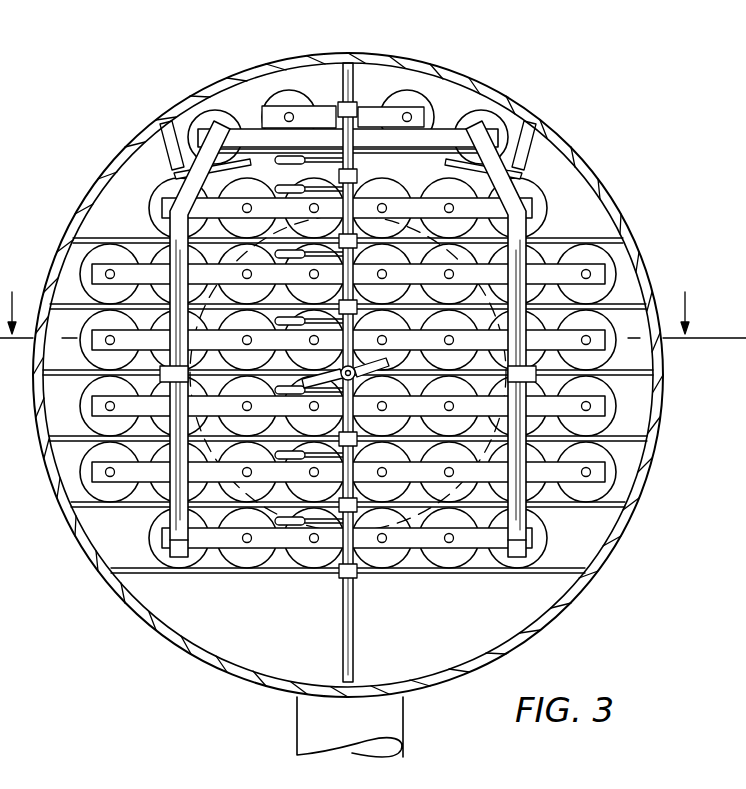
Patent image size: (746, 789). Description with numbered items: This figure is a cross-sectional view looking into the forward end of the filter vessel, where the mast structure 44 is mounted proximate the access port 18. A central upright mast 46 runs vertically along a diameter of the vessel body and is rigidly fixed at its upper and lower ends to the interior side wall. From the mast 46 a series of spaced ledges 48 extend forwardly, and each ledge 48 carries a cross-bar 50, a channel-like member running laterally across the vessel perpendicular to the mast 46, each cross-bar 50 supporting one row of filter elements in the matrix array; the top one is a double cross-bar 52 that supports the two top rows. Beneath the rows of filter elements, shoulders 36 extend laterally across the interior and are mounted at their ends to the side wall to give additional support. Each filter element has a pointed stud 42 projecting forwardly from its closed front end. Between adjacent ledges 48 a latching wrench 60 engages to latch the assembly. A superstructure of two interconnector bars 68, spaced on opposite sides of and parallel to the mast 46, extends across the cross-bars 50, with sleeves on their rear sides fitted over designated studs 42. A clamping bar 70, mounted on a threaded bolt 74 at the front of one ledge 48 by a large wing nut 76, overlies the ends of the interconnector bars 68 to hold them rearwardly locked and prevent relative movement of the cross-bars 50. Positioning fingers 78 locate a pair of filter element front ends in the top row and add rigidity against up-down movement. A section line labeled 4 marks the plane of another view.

The access port 18 is at (408, 518).
The shoulders 36 is at (112, 512).
The pointed stud 42 is at (595, 473).
The mast structure 44 is at (364, 98).
The central upright mast 46 is at (368, 632).
The ledges 48 is at (358, 180).
The cross-bar 50 is at (596, 333).
The double cross-bar 52 is at (432, 113).
The latching wrench 60 is at (306, 524).
The interconnector bars 68 is at (528, 228).
The clamping bar 70 is at (162, 376).
The threaded bolt 74 is at (330, 373).
The wing nut 76 is at (388, 368).
The positioning fingers 78 is at (528, 135).
The section line 4- 4 is at (373, 313).